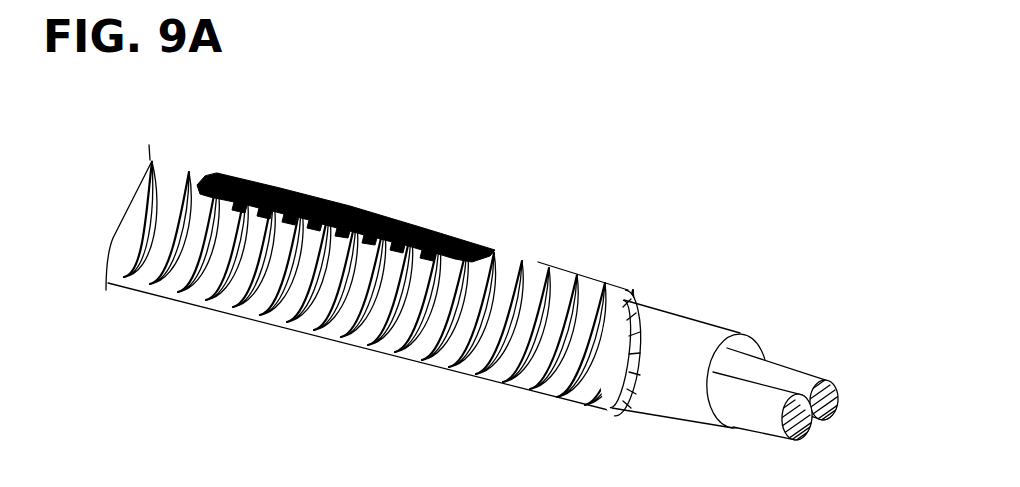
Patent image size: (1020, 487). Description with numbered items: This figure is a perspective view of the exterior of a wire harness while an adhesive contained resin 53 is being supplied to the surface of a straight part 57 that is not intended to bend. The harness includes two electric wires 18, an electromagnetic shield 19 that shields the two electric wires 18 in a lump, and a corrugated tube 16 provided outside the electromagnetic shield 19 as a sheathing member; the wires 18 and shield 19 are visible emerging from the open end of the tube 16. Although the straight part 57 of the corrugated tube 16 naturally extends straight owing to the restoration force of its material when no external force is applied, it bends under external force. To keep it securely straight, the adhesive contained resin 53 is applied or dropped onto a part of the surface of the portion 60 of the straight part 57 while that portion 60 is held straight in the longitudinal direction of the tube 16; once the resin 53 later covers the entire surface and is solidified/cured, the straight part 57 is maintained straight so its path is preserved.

The corrugated tube 16 is at (370, 291).
The adhesive contained resin 53 is at (392, 212).
The straight part 57 is at (545, 258).
The portion which is not intended to bend 60 is at (325, 296).
The electromagnetic shield 19 is at (700, 333).
The electric wires 18 is at (793, 376).